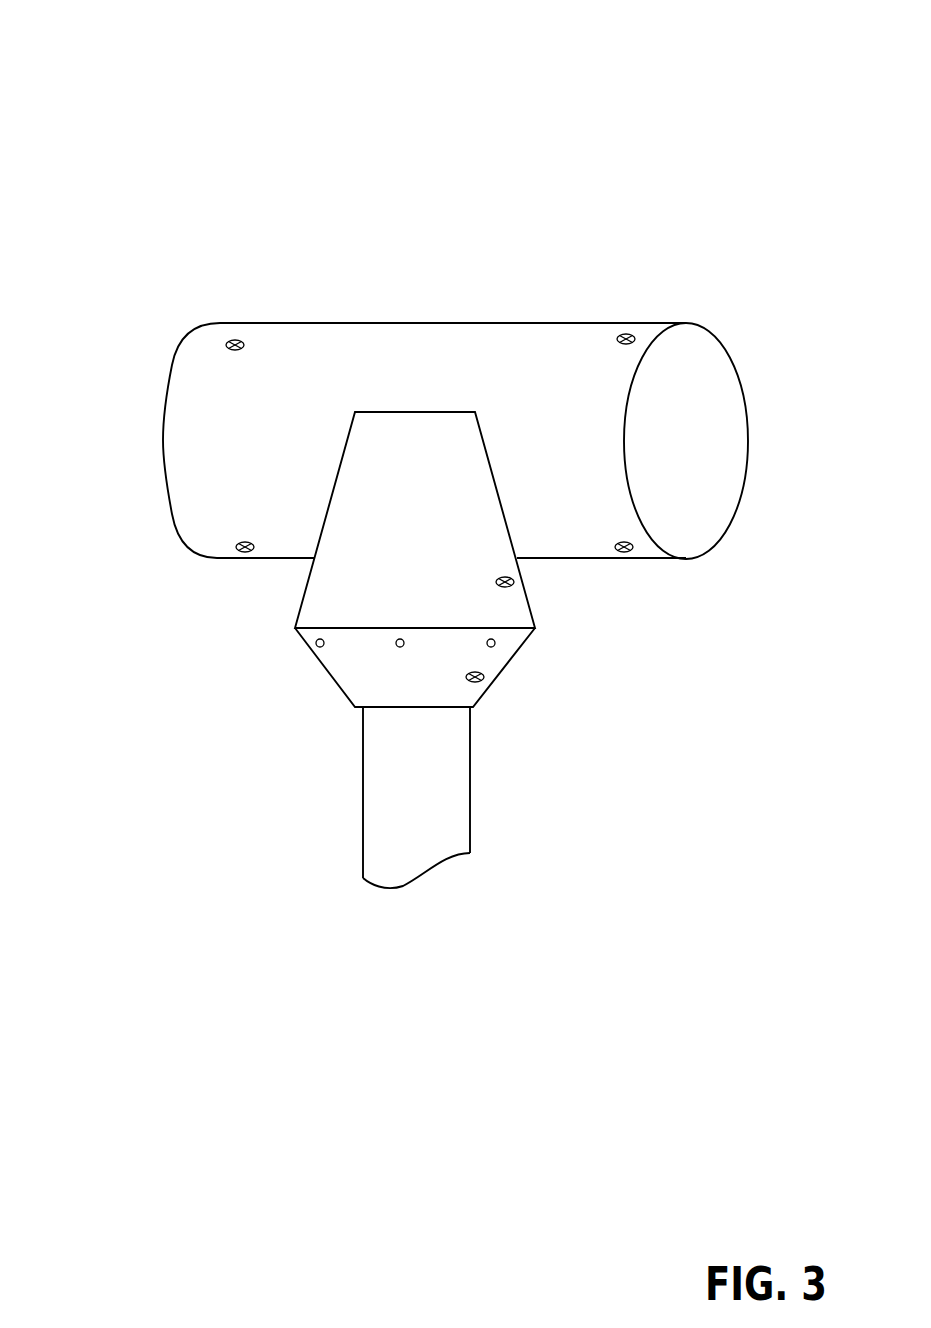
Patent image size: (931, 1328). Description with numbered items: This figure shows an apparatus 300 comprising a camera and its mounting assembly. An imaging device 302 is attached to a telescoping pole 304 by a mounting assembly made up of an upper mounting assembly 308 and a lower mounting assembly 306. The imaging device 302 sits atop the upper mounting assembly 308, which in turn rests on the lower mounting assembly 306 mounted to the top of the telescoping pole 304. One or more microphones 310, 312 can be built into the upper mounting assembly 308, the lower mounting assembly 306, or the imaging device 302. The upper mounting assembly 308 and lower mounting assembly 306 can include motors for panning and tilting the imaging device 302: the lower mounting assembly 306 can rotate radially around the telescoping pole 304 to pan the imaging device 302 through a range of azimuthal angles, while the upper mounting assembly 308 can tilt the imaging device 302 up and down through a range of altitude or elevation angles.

The apparatus 300 is at (103, 34).
The imaging device 302 is at (310, 323).
The telescoping pole 304 is at (387, 850).
The lower mounting assembly 306 is at (352, 678).
The upper mounting assembly 308 is at (335, 577).
The microphone 310 is at (632, 552).
The microphone 312 is at (483, 678).